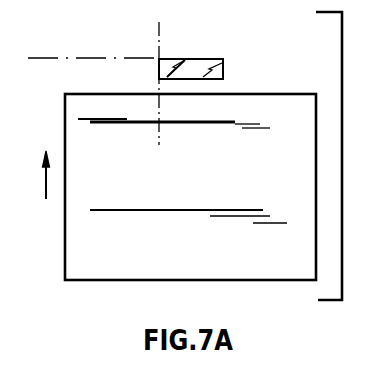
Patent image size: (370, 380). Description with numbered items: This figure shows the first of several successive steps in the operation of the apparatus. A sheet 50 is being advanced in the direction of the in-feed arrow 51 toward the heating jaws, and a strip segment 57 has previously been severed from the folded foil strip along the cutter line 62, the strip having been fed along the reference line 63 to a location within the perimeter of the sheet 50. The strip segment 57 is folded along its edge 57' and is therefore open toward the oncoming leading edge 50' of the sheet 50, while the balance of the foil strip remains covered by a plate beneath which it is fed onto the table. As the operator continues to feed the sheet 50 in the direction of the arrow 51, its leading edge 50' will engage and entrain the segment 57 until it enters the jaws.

The sheet 50 is at (166, 187).
The leading edge of the sheet 50' is at (318, 156).
The in-feed arrow 51 is at (45, 184).
The strip segment 57 is at (221, 62).
The folded edge of the strip segment 57' is at (215, 44).
The cutter line 62 is at (160, 27).
The reference line 63 is at (30, 59).